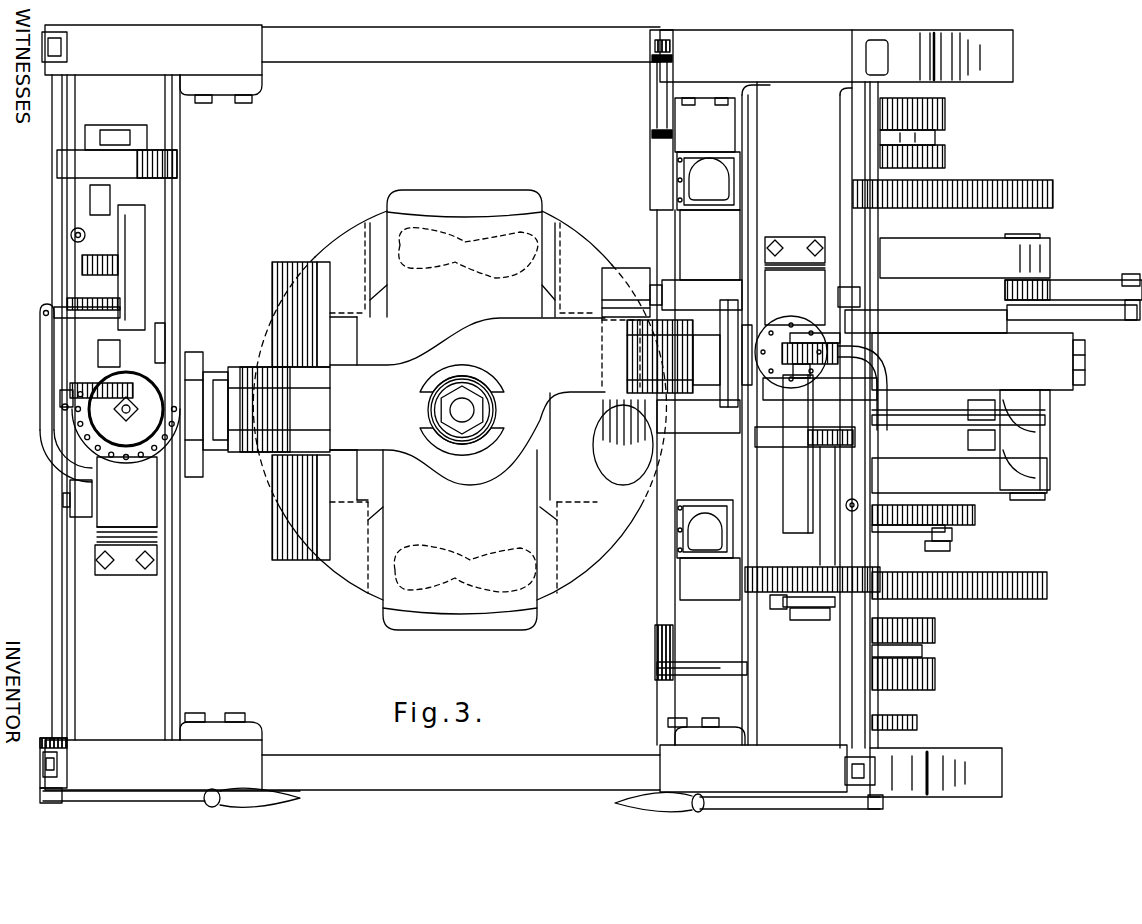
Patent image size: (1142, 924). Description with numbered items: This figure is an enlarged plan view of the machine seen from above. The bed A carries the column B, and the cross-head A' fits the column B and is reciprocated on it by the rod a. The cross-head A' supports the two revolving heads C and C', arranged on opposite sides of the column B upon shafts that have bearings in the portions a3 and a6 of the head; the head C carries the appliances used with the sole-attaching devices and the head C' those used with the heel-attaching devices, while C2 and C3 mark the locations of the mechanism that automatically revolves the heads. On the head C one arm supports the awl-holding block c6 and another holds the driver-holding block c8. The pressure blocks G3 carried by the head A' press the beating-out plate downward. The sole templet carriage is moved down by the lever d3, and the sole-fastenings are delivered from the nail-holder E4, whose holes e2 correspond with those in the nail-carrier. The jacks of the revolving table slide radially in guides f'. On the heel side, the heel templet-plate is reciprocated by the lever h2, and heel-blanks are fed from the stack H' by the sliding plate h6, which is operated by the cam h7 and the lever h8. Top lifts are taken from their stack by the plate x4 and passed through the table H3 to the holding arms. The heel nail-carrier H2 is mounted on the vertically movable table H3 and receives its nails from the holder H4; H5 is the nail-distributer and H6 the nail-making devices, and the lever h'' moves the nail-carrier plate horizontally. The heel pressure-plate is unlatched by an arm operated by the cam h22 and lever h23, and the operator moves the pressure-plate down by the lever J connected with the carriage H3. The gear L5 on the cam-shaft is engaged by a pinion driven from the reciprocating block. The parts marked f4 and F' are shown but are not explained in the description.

The bed A is at (526, 411).
The cross-head A' is at (467, 408).
The rod a is at (462, 410).
The bearing portion of head a3 is at (238, 448).
The bearing portion of head a6 is at (683, 376).
The column B is at (484, 450).
The revolving head C is at (281, 408).
The revolving head C' is at (610, 401).
The location of head-turning mechanism C2 is at (193, 368).
The location of head-turning mechanism C3 is at (728, 398).
The awl-holding block c6 is at (286, 300).
The driver-holding block c8 is at (294, 516).
The lever d3 is at (170, 801).
The nail-holder E4 is at (70, 472).
The holes e2 is at (136, 458).
The guides f' is at (463, 408).
The guide box f4 is at (716, 112).
The flange F' is at (547, 446).
The pressure block G3 is at (471, 410).
The stack of heel-blocks H' is at (708, 550).
The nail-carrier H2 is at (978, 361).
The table H3 is at (672, 292).
The nail-holder H4 is at (835, 305).
The nail-distributer H5 is at (802, 306).
The nail-making devices H6 is at (812, 497).
The lever h2 is at (961, 445).
The sliding plate h6 is at (702, 652).
The cam h7 is at (935, 672).
The lever h8 is at (652, 665).
The lever h'' is at (1073, 290).
The cam h22 is at (976, 517).
The lever h23 is at (917, 547).
The gear L5 is at (953, 362).
The plate x4 is at (658, 100).
The lever J is at (749, 808).